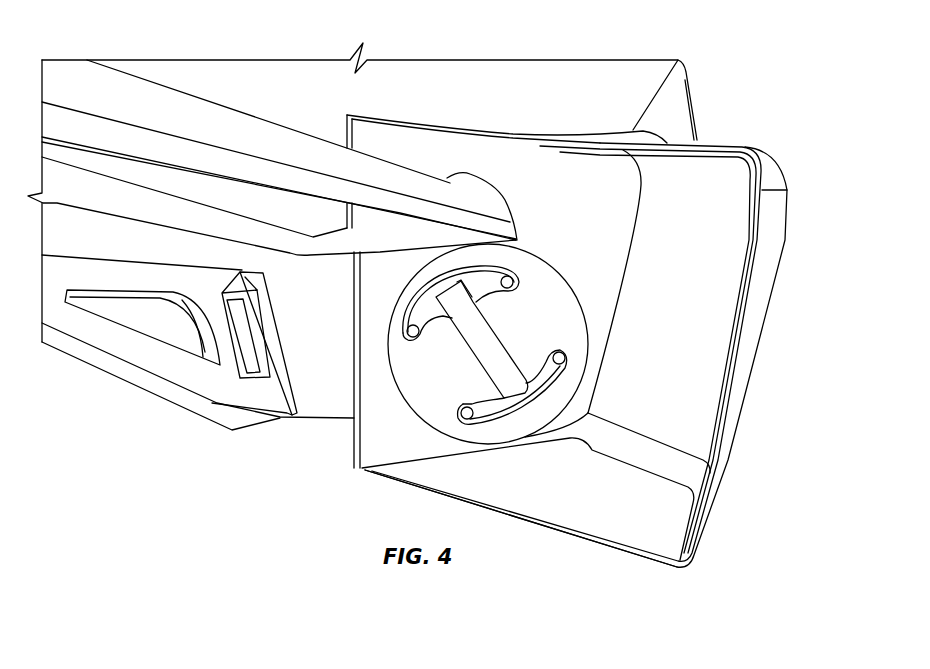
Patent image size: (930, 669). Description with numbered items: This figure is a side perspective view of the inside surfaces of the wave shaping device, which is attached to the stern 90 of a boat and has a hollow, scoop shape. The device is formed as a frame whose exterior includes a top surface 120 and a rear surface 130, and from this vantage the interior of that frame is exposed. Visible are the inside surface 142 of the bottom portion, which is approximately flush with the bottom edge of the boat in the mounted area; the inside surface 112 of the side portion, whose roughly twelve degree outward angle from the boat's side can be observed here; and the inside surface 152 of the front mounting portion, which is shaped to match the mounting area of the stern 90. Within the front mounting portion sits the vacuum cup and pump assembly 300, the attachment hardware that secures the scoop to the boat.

The stern 90 is at (490, 92).
The inside surface of the side portion 112 is at (698, 215).
The top surface 120 is at (750, 157).
The rear surface 130 is at (762, 292).
The inside surface of the bottom portion 142 is at (587, 523).
The inside surface of the front mounting portion 152 is at (428, 403).
The vacuum cup and pump assembly 300 is at (480, 350).